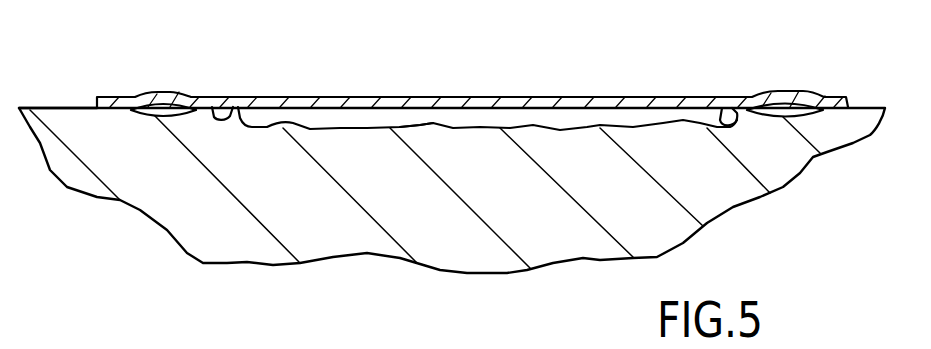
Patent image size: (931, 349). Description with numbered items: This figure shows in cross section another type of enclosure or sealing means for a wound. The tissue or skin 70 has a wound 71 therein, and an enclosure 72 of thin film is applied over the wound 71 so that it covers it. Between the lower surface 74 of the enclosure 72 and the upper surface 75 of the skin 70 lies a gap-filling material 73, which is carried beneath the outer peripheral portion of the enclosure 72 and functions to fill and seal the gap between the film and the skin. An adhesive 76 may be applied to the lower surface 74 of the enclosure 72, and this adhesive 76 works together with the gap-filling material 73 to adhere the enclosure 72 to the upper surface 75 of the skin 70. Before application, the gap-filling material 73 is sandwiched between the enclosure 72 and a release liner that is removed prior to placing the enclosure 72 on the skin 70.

The tissue or skin 70 is at (457, 258).
The wound 71 is at (421, 117).
The enclosure 72 is at (542, 103).
The gap-filling material 73 is at (167, 107).
The lower surface 74 is at (291, 111).
The upper surface 75 is at (73, 107).
The adhesive 76 is at (232, 118).